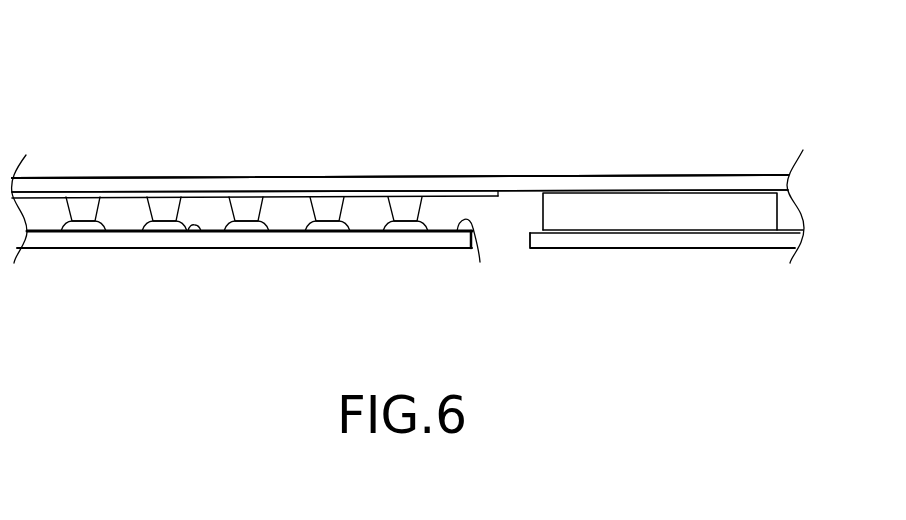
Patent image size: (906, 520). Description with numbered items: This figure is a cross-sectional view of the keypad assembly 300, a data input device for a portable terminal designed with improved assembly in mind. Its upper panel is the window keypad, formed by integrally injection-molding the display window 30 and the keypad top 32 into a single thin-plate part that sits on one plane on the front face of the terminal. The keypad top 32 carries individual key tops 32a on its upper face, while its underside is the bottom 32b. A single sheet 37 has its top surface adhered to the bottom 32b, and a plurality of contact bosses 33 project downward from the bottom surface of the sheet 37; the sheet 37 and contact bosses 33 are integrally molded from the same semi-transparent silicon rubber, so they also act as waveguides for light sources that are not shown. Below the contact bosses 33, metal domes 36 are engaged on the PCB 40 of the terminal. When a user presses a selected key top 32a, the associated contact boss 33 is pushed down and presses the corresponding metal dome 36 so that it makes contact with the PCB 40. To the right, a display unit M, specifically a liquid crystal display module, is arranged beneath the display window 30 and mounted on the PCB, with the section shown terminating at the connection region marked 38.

The keypad assembly 300 is at (385, 30).
The display window 30 is at (643, 186).
The keypad top 32 is at (282, 186).
The key top 32a is at (160, 178).
The bottom of the keypad top 32b is at (441, 191).
The contact bosses 33 is at (95, 205).
The metal domes 36 is at (202, 231).
The sheet 37 is at (43, 197).
The flexible printed circuit 38 is at (480, 262).
The PCB 40 is at (338, 238).
The display unit M is at (613, 212).
The element PCB is at (708, 241).